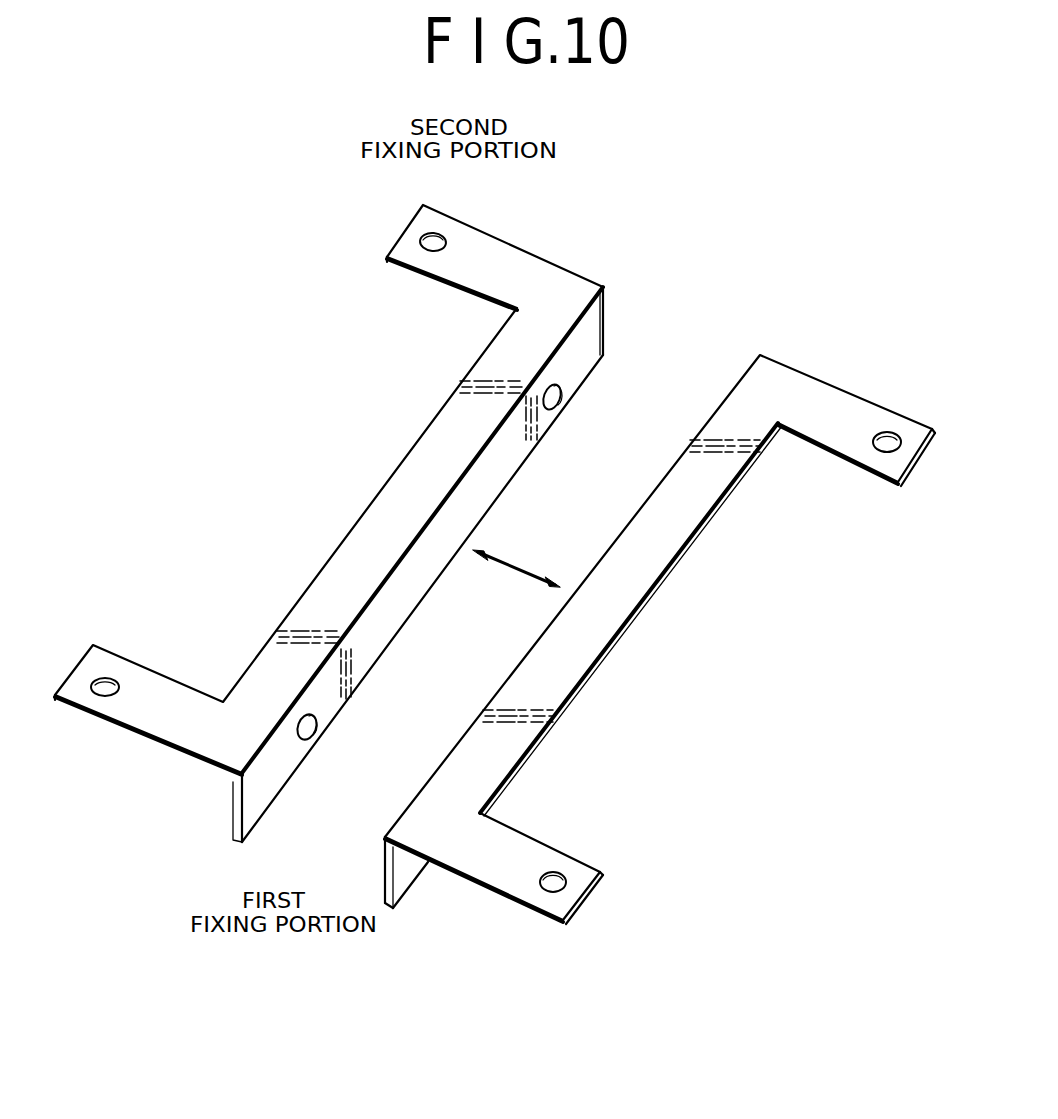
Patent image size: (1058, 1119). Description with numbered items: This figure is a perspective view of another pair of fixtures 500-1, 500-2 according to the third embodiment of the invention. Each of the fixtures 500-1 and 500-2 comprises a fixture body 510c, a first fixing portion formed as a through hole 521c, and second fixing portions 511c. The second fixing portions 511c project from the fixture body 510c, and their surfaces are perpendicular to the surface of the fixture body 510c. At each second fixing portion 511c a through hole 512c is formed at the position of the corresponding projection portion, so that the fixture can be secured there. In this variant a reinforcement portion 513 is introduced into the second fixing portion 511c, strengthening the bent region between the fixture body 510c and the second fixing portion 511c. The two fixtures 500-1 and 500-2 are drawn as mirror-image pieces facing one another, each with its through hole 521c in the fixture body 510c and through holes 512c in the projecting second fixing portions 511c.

The fixture 500-1 is at (567, 229).
The fixture 500-2 is at (818, 332).
The fixture body 510c is at (343, 532).
The second fixing portion 511c is at (437, 212).
The through hole 512c is at (433, 248).
The reinforcement portion 513 is at (437, 440).
The first fixing portion (through hole) 521c is at (557, 406).